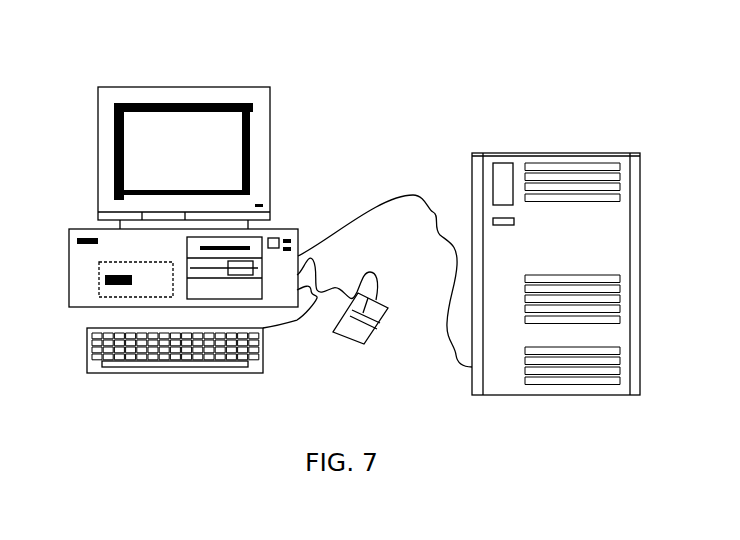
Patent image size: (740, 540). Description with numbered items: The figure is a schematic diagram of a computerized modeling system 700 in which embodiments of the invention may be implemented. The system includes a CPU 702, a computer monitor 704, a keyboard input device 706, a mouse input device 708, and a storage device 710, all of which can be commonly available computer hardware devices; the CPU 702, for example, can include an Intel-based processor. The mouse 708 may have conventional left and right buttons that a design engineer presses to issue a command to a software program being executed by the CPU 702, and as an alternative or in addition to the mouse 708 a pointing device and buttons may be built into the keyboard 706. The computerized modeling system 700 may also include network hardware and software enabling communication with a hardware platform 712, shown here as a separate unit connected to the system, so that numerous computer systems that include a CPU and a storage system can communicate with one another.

The computerized modeling system 700 is at (265, 62).
The CPU 702 is at (105, 280).
The computer monitor 704 is at (237, 148).
The keyboard input device 706 is at (87, 361).
The mouse input device 708 is at (363, 348).
The storage device 710 is at (247, 288).
The hardware platform 712 is at (513, 153).